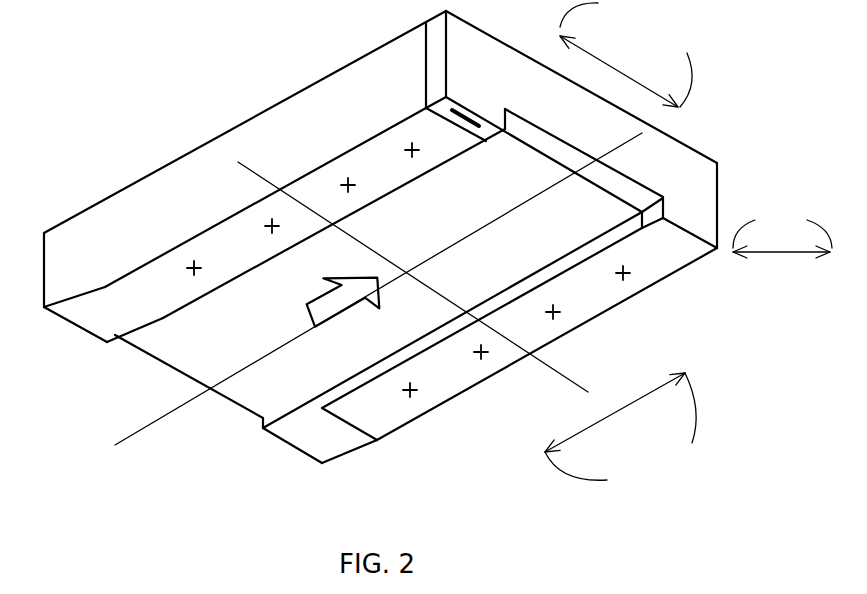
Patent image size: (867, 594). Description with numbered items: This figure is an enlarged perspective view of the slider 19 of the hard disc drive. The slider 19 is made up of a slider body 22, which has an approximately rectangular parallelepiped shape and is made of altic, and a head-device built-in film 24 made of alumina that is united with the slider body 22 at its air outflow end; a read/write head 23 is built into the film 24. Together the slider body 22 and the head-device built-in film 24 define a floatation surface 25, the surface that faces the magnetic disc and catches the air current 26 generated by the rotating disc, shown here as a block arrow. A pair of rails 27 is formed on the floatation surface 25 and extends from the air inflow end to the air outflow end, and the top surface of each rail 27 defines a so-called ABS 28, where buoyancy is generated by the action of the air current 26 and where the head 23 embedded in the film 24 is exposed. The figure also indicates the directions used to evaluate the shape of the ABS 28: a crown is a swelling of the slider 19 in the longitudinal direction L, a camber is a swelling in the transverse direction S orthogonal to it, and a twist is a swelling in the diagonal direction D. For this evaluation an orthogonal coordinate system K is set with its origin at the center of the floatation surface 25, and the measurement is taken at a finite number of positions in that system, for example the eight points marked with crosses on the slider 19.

The slider 19 is at (248, 115).
The slider body 22 is at (682, 271).
The read/write head 23 is at (458, 110).
The head-device built-in film 24 is at (720, 181).
The floatation surface 25 is at (401, 248).
The air current 26 is at (313, 320).
The rail 27 is at (214, 291).
The ABS 28 is at (430, 158).
The orthogonal coordinate system K is at (273, 183).
The transverse direction S is at (626, 55).
The diagonal direction D is at (782, 233).
The longitudinal direction L is at (620, 427).